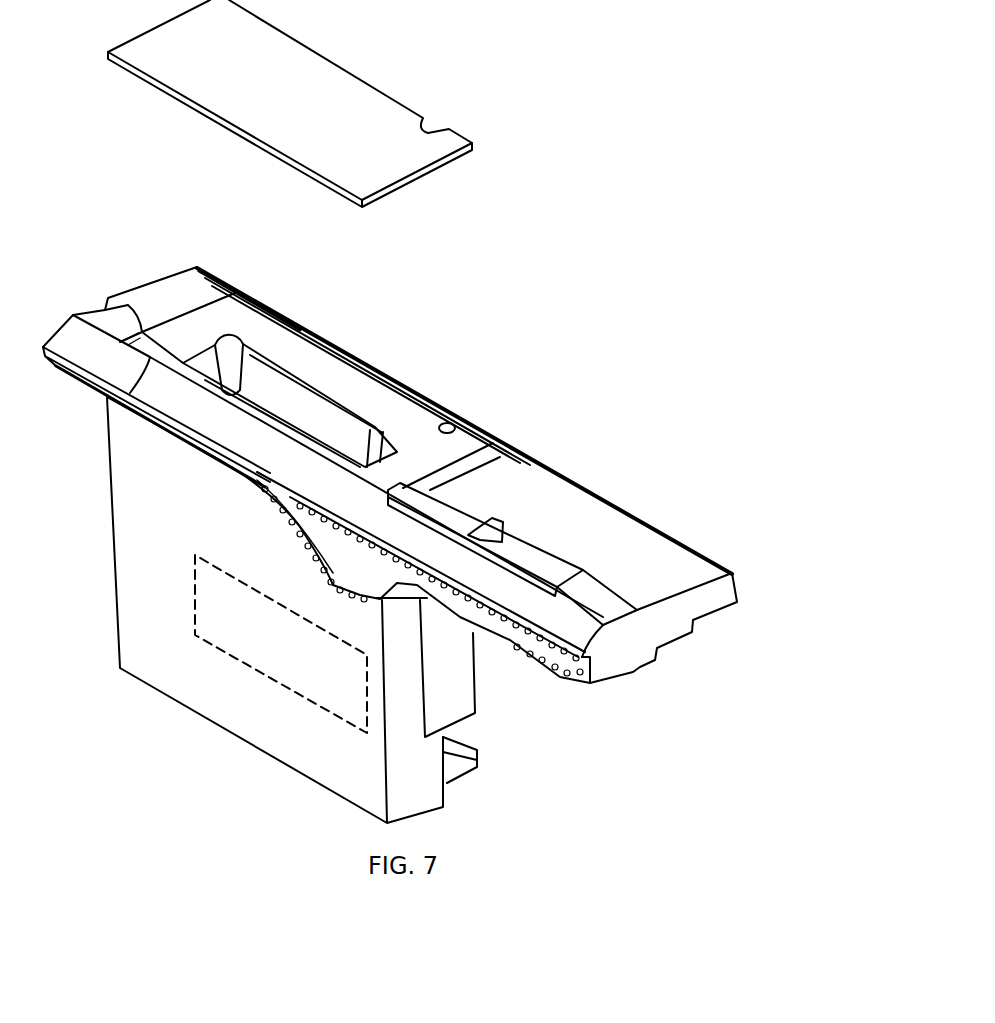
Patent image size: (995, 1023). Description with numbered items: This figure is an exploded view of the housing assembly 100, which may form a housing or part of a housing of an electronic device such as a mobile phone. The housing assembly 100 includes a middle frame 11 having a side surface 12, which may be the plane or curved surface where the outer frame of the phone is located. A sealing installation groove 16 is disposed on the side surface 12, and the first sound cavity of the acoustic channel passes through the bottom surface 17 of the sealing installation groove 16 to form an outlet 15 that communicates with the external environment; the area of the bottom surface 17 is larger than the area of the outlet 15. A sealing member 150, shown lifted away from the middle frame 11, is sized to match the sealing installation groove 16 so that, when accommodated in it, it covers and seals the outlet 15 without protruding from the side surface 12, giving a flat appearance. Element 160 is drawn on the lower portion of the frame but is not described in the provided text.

The housing assembly 100 is at (545, 106).
The sealing member 150 is at (228, 72).
The middle frame 11 is at (617, 560).
The side surface 12 is at (530, 487).
The outlet 15 is at (327, 410).
The sealing installation groove 16 is at (240, 318).
The bottom surface 17 is at (292, 349).
The terminal module 160 is at (367, 713).